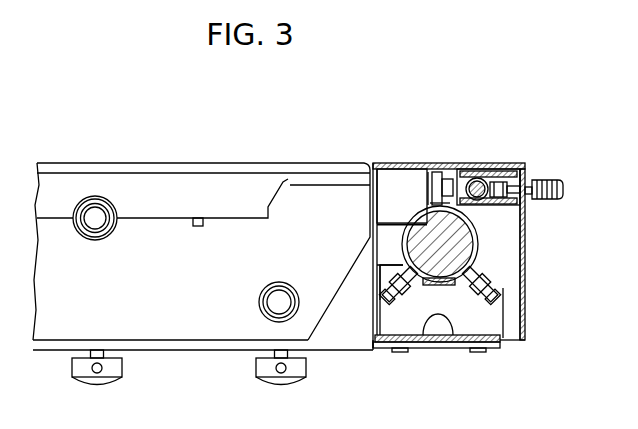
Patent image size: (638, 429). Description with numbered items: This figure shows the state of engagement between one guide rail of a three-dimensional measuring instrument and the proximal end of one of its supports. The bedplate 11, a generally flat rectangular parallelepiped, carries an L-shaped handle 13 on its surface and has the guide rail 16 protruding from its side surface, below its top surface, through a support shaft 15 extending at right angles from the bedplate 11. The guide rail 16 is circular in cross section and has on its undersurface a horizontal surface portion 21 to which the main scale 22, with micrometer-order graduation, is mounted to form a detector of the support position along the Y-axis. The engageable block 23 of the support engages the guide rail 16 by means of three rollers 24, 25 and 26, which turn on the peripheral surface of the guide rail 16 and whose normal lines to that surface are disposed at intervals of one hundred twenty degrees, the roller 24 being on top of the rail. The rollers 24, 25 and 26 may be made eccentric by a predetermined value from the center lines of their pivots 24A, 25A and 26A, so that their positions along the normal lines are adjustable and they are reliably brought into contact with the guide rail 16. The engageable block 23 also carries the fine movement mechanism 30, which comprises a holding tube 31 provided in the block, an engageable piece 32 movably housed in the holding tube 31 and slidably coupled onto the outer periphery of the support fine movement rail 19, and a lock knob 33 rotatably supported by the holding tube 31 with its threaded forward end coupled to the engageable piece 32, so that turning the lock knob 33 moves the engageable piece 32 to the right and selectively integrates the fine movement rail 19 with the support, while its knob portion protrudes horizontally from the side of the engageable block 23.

The bedplate 11 is at (201, 163).
The handle 13 is at (172, 330).
The support shaft 15 is at (384, 251).
The guide rail 16 is at (478, 231).
The support fine movement rail 19 is at (490, 165).
The horizontal surface portion 21 is at (480, 263).
The main scale 22 is at (456, 268).
The engageable block 23 is at (392, 162).
The roller 24 is at (443, 165).
The pivot 24A is at (421, 170).
The roller 25 is at (395, 290).
The pivot 25A is at (406, 293).
The roller 26 is at (494, 300).
The pivot 26A is at (504, 318).
The fine movement mechanism 30 is at (522, 109).
The holding tube 31 is at (517, 162).
The engageable piece 32 is at (472, 166).
The lock knob 33 is at (541, 180).